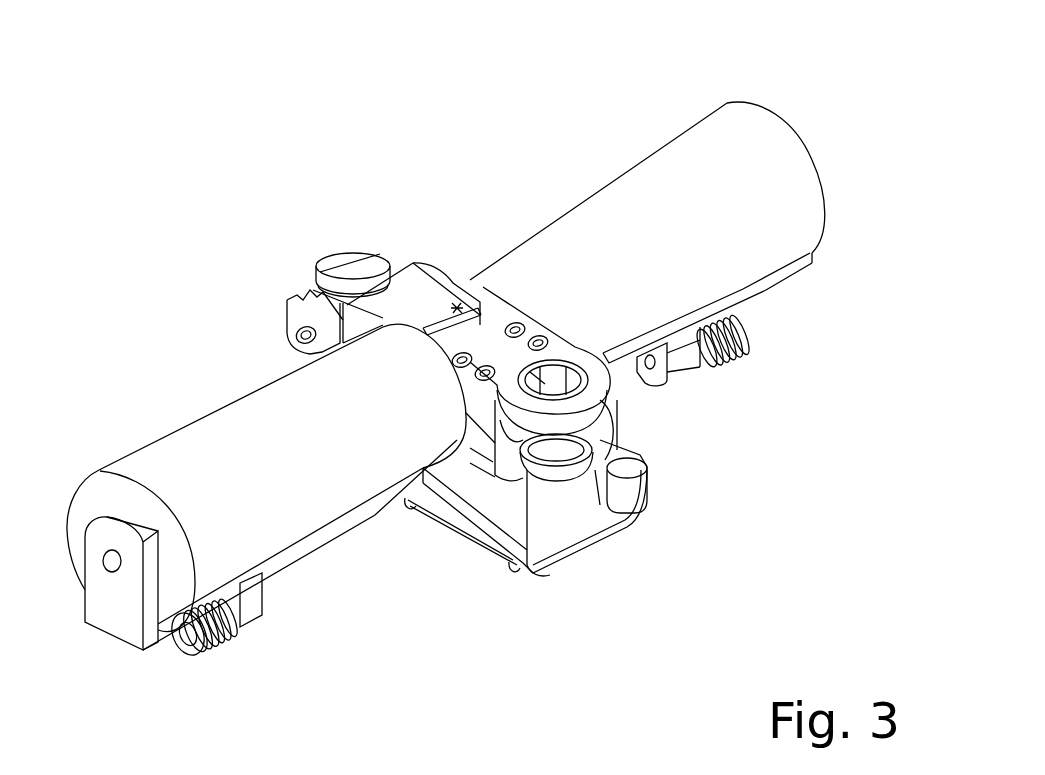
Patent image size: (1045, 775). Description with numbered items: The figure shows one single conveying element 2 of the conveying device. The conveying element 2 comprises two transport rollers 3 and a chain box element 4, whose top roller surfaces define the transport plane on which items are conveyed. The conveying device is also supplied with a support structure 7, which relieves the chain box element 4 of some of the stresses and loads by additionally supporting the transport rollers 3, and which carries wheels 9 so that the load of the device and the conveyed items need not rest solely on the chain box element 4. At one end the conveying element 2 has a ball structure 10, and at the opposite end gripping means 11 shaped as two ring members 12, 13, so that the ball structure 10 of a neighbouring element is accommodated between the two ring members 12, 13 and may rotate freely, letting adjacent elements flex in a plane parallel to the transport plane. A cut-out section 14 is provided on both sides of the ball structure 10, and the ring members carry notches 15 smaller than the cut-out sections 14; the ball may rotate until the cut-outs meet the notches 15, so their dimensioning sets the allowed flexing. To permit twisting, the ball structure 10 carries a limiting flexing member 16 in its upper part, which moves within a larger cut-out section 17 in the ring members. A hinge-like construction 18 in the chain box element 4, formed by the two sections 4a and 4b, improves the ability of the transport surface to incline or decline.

The conveying element 2 is at (508, 148).
The transport rollers 3 is at (678, 203).
The chain box element 4 is at (582, 575).
The chain box element section 4a is at (318, 275).
The chain box element section 4b is at (500, 348).
The support structure 7 is at (747, 293).
The wheels 9 is at (723, 367).
The ball structure 10 is at (317, 245).
The gripping means 11 is at (625, 430).
The ring member 12 is at (612, 372).
The ring member 13 is at (541, 483).
The cut-out section 14 is at (293, 292).
The notches 15 is at (523, 457).
The limiting flexing member 16 is at (363, 260).
The cut-out section 17 is at (603, 500).
The hinge-like construction 18 is at (456, 308).